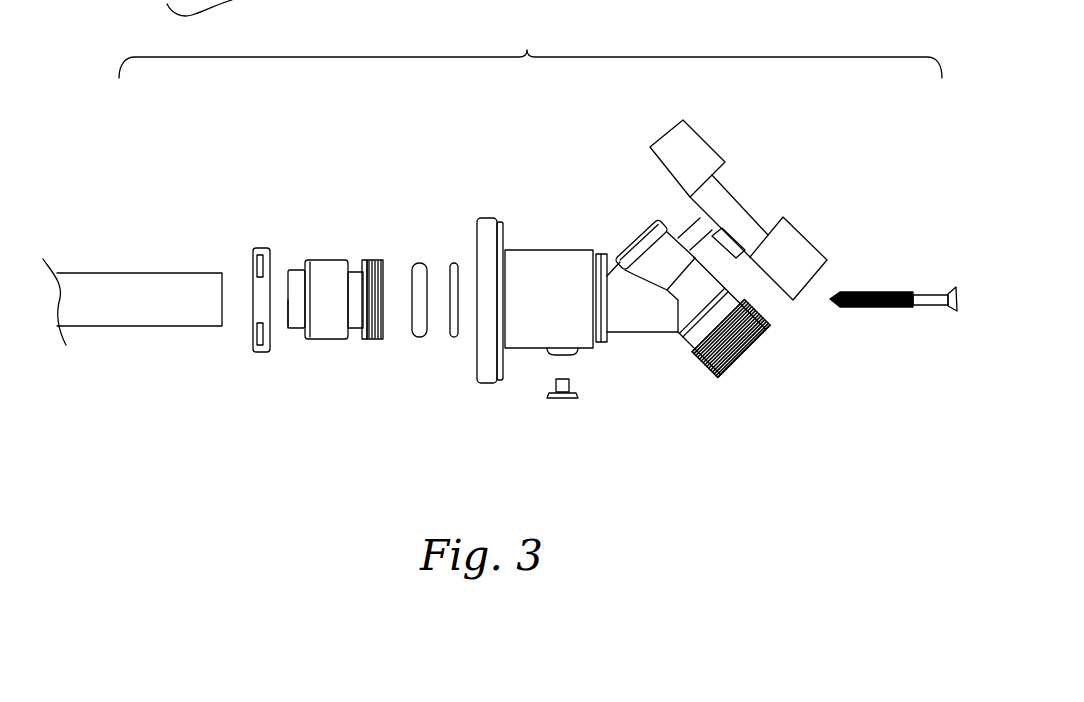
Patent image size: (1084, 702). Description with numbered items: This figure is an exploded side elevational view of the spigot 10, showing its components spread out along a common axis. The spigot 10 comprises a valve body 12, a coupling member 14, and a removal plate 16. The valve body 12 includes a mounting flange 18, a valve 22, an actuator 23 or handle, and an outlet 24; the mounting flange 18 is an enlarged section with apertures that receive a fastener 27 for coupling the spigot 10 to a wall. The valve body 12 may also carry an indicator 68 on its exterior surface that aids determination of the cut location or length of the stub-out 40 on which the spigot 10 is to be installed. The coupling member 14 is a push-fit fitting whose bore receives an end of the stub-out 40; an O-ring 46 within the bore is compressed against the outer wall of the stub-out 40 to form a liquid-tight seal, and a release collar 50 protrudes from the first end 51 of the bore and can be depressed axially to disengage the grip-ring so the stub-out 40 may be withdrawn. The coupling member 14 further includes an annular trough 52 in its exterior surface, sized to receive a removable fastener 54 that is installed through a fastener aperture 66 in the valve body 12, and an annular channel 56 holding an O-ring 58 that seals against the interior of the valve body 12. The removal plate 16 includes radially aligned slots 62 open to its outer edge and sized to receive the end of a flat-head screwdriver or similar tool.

The spigot 10 is at (527, 48).
The valve body 12 is at (666, 231).
The coupling member 14 is at (339, 293).
The removal plate 16 is at (230, 284).
The mounting flange 18 is at (491, 215).
The valve 22 is at (749, 196).
The actuator 23 is at (685, 118).
The outlet 24 is at (728, 369).
The fastener 27 is at (908, 292).
The stub-out 40 is at (156, 272).
The O-ring 46 is at (418, 262).
The release collar 50 is at (295, 270).
The first end 51 is at (288, 318).
The annular trough 52 is at (353, 268).
The removable fastener 54 is at (576, 399).
The annular channel 56 is at (372, 340).
The O-ring 58 is at (453, 262).
The slots 62 is at (253, 336).
The fastener aperture 66 is at (570, 352).
The indicator 68 is at (621, 336).